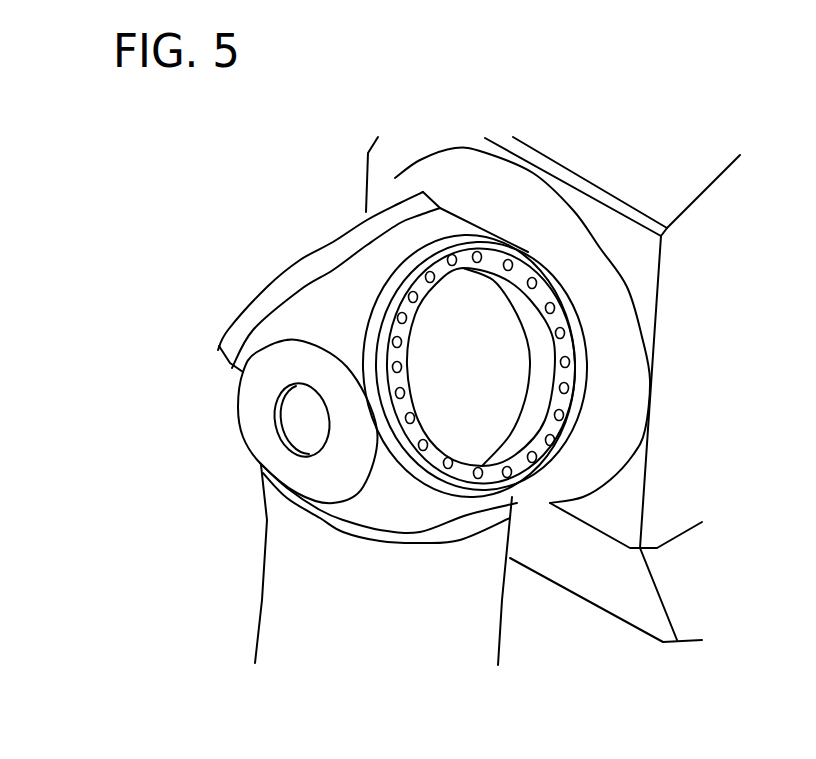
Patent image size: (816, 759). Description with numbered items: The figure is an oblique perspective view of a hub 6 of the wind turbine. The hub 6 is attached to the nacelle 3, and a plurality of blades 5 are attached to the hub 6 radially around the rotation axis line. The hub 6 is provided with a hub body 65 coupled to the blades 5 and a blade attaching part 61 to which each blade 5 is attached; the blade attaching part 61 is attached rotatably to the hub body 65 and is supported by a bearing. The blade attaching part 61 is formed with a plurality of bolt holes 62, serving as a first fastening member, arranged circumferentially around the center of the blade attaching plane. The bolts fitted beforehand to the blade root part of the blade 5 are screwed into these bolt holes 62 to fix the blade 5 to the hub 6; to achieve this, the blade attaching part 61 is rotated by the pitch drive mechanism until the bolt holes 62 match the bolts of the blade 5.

The nacelle 3 is at (600, 612).
The blade 5 is at (257, 570).
The hub 6 is at (168, 325).
The blade attaching part 61 is at (437, 457).
The bolt holes 62 is at (418, 443).
The hub body 65 is at (333, 293).